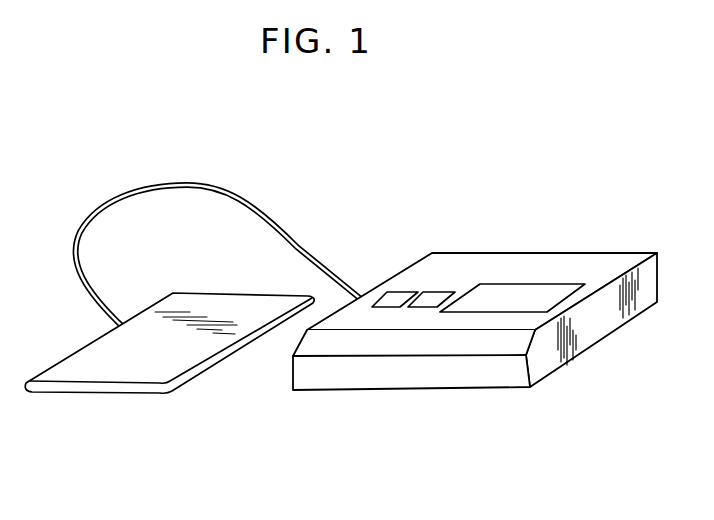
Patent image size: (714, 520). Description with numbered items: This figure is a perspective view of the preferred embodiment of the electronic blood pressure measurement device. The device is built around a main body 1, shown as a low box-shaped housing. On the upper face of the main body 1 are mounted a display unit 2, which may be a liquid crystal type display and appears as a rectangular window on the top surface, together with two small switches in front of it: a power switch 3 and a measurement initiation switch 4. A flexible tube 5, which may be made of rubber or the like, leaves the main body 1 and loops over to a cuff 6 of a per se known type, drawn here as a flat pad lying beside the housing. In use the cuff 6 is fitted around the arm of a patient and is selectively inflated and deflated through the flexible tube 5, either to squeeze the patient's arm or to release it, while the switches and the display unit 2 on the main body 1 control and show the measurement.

The main body 1 is at (515, 263).
The display unit 2 is at (562, 292).
The power switch 3 is at (397, 302).
The measurement initiation switch 4 is at (437, 298).
The flexible tube 5 is at (195, 183).
The cuff 6 is at (127, 372).